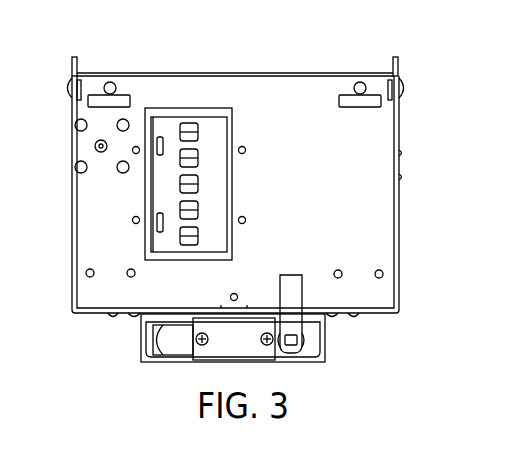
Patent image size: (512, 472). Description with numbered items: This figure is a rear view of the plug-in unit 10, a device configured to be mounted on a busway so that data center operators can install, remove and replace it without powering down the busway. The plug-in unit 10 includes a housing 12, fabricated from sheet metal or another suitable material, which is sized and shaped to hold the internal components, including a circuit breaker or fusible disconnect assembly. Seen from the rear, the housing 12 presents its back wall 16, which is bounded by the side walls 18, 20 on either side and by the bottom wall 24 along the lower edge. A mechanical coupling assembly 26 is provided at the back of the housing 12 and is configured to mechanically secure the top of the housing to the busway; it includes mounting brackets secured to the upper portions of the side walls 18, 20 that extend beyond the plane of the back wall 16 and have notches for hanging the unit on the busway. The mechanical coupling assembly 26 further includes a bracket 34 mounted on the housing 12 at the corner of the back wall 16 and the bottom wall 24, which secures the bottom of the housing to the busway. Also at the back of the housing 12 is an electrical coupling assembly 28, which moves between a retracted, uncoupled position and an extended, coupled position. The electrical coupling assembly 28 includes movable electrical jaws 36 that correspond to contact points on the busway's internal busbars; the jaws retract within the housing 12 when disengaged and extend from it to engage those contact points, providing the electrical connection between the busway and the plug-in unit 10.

The plug-in unit 10 is at (319, 60).
The housing 12 is at (90, 315).
The back wall 16 is at (358, 195).
The side wall 18 is at (400, 118).
The side wall 20 is at (71, 227).
The bottom wall 24 is at (378, 315).
The mechanical coupling assembly 26 is at (404, 58).
The electrical coupling assembly 28 is at (127, 184).
The bracket 34 is at (296, 291).
The movable electrical jaws 36 is at (186, 182).